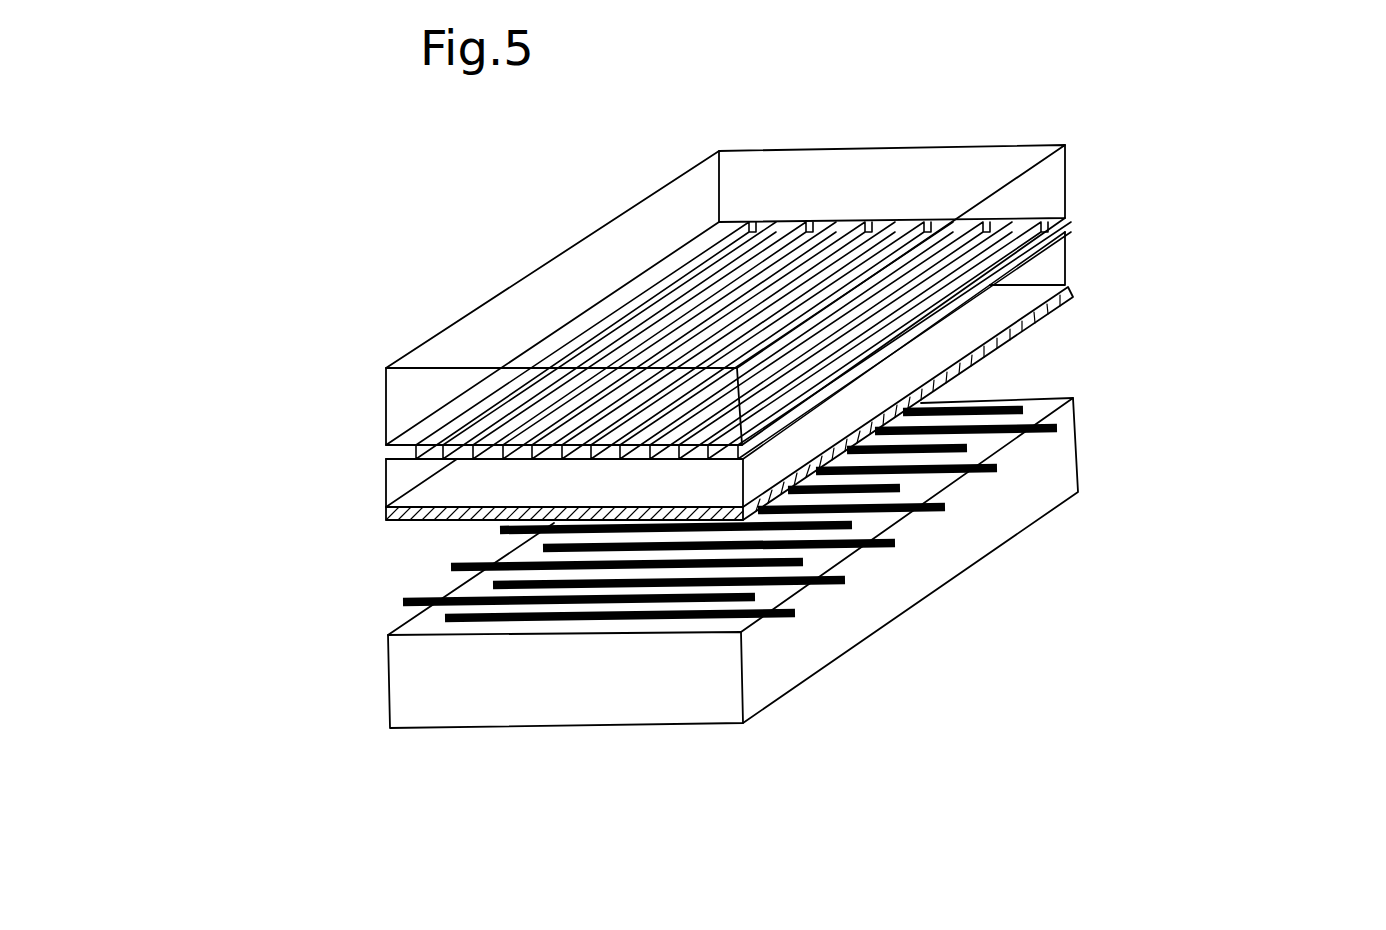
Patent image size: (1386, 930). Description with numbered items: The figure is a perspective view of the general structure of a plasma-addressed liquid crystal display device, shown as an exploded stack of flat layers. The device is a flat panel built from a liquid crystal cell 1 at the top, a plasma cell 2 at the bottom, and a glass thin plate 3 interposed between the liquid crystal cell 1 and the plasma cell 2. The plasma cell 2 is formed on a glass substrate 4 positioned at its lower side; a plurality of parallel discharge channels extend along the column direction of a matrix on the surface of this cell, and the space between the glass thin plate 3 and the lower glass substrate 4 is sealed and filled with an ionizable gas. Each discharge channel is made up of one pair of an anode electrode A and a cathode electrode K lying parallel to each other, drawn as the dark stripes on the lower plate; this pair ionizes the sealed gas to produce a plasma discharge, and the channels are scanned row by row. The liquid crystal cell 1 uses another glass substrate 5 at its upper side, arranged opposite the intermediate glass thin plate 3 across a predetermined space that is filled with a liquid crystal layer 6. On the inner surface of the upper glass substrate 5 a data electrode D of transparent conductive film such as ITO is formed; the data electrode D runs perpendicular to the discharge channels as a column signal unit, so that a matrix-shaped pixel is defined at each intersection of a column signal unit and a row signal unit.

The liquid crystal cell 1 is at (1093, 289).
The plasma cell 2 is at (1104, 489).
The glass thin plate 3 is at (385, 516).
The glass substrate 4 is at (548, 714).
The glass substrate 5 is at (590, 255).
The liquid crystal layer 6 is at (397, 473).
The anode electrode A is at (403, 600).
The data electrode D is at (537, 342).
The cathode electrode K is at (797, 613).